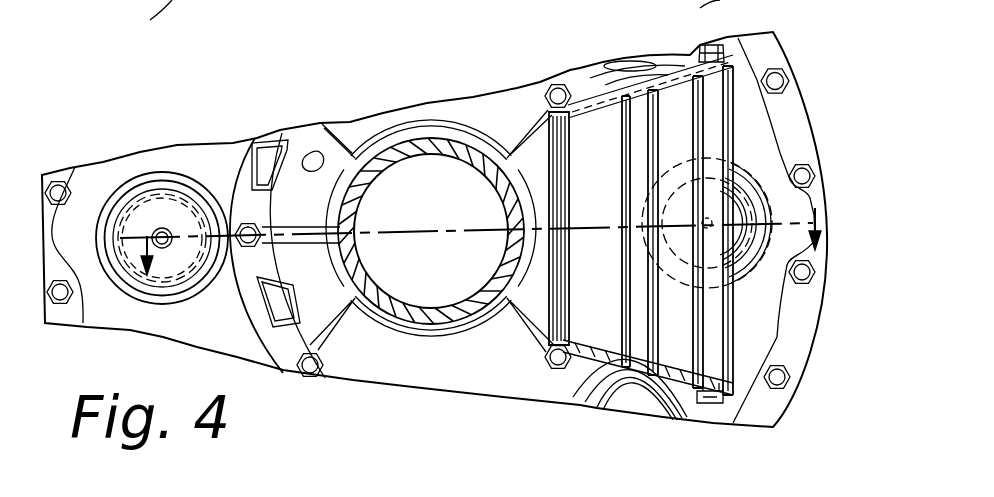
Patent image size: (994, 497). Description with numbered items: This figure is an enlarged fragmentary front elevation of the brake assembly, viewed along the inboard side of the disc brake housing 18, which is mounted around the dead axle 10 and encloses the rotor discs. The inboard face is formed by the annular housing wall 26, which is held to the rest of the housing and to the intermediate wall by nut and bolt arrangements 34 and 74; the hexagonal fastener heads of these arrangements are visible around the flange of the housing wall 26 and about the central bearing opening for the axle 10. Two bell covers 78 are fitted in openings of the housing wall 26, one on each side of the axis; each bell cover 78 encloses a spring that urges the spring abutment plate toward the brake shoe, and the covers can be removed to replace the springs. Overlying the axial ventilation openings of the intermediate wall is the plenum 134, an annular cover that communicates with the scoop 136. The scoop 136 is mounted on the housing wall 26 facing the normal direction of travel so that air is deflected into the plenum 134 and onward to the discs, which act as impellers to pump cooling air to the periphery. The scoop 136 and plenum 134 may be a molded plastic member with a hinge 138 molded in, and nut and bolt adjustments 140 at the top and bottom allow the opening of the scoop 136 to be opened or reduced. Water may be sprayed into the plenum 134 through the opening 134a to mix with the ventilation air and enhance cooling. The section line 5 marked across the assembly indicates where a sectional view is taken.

The section line 5- 5 is at (147, 238).
The axle 10 is at (405, 412).
The disc brake housing 18 is at (793, 64).
The annular housing wall 26 is at (757, 120).
The nut and bolt arrangements 34 is at (805, 280).
The nut and bolt arrangements 74 is at (246, 250).
The bell cover 78 is at (127, 270).
The plenum 134 is at (462, 380).
The opening 134a is at (313, 153).
The scoop 136 is at (736, 327).
The hinge 138 is at (553, 346).
The nut and bolt adjustments 140 is at (720, 44).